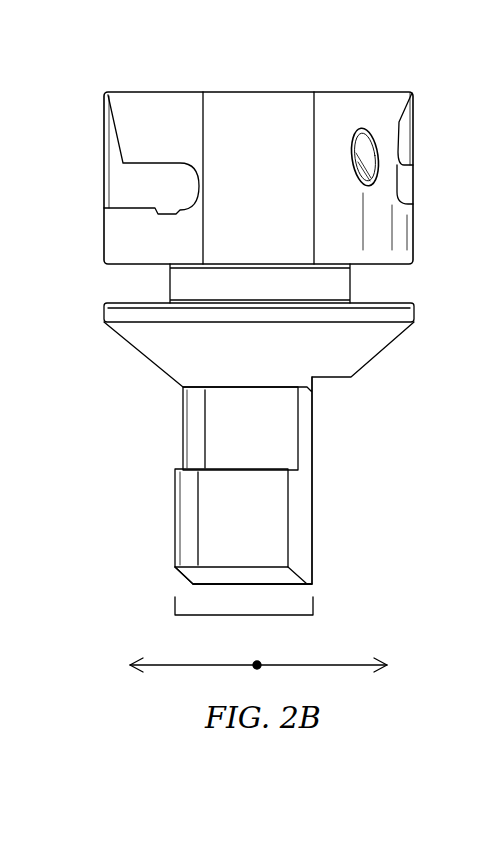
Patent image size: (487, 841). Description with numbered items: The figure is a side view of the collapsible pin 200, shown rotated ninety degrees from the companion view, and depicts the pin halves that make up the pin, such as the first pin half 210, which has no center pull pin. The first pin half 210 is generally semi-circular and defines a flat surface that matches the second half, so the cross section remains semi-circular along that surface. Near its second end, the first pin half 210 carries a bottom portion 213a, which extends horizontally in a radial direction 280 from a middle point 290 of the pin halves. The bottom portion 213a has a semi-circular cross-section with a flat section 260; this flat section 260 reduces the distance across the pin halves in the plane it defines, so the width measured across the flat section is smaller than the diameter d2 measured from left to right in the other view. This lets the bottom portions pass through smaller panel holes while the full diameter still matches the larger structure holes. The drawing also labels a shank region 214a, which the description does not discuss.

The collapsible pin 200 is at (222, 51).
The first pin half 210 is at (125, 236).
The flat section 260 is at (313, 525).
The first shank portion 214a is at (191, 416).
The bottom portion 213a is at (197, 509).
The diameter d2 is at (244, 606).
The middle point 290 is at (257, 662).
The radial direction 280 is at (258, 658).